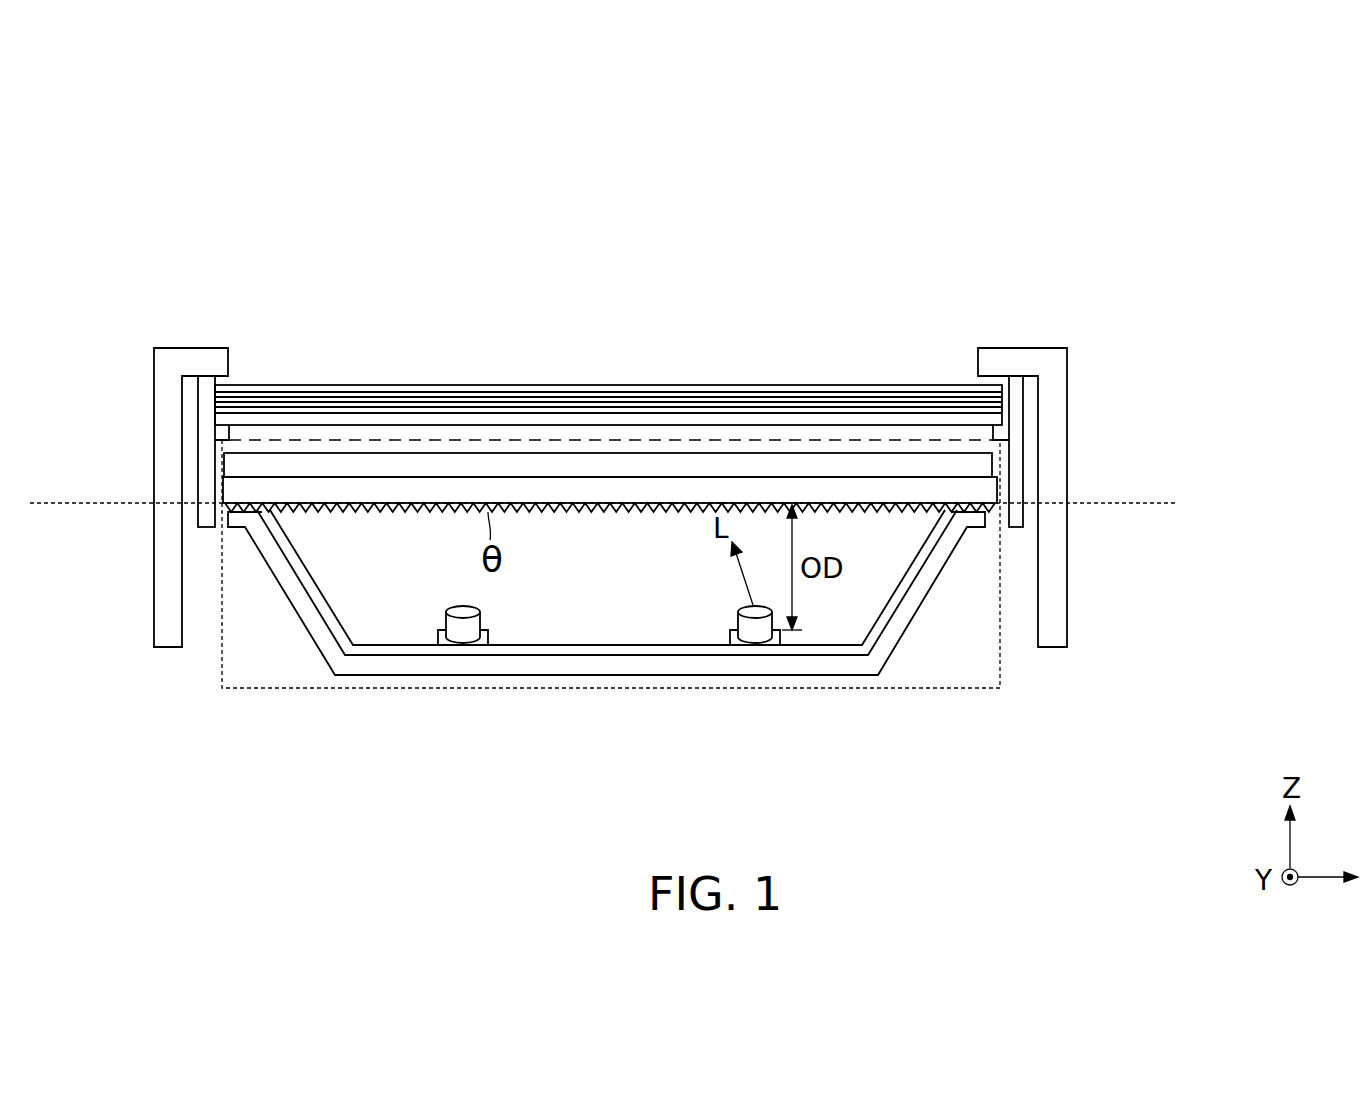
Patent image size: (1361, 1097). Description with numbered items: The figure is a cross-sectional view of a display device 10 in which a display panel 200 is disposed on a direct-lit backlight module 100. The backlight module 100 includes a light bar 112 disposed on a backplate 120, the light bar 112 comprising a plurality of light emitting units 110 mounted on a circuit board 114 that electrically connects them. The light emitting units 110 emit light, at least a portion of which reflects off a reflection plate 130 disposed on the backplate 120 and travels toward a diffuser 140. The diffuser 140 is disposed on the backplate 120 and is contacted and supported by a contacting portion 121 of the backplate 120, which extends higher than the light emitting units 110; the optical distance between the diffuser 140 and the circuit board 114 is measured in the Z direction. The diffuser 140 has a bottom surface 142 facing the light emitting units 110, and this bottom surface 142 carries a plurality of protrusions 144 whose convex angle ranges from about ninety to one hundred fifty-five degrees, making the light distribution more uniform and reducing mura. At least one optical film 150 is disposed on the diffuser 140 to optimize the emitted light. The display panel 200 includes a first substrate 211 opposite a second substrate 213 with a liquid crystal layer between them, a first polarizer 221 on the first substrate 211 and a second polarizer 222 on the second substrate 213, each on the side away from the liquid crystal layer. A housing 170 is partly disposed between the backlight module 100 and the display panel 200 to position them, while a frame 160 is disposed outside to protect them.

The display device 10 is at (72, 123).
The backlight module 100 is at (215, 612).
The contacting portion 121 is at (228, 518).
The display panel 200 is at (509, 359).
The first polarizer 221 is at (218, 388).
The first substrate 211 is at (218, 399).
The second substrate 213 is at (218, 410).
The second polarizer 222 is at (218, 420).
The frame 160 is at (1021, 346).
The housing 170 is at (1025, 430).
The optical film 150 is at (970, 463).
The diffuser 140 is at (970, 490).
The bottom surface 142 is at (993, 508).
The protrusions 144 is at (993, 512).
The reflection plate 130 is at (926, 553).
The backplate 120 is at (922, 588).
The light bar 112 is at (1298, 573).
The light emitting units 110 is at (750, 627).
The circuit board 114 is at (773, 638).